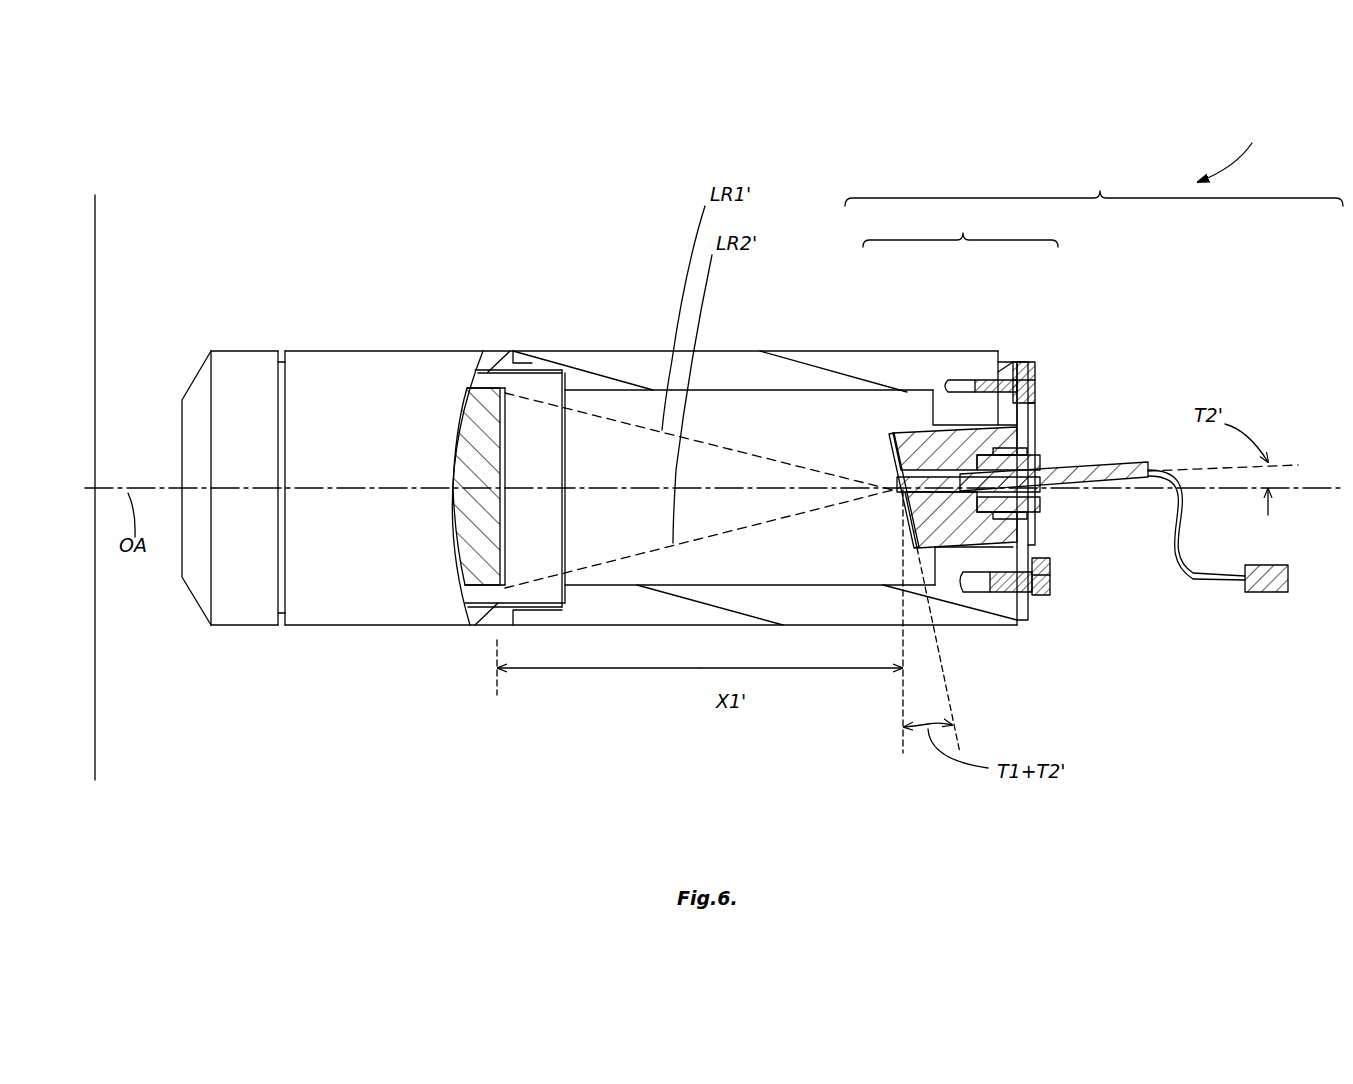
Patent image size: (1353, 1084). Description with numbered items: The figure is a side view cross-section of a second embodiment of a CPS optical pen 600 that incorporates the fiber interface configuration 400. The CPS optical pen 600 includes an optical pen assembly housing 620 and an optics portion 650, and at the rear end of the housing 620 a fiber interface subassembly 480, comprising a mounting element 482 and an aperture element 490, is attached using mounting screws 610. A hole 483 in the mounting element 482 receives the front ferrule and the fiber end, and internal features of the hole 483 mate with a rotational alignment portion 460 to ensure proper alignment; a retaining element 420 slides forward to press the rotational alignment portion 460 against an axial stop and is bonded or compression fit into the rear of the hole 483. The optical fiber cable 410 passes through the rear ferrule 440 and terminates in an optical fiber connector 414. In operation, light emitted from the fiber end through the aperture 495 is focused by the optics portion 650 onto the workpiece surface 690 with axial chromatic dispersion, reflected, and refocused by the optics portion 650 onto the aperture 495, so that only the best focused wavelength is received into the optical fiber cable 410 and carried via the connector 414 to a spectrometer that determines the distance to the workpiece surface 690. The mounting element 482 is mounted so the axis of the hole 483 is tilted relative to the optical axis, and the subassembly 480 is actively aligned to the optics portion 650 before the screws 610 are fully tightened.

The CPS optical pen fiber interface configuration 400 is at (1094, 185).
The optical fiber cable 410 is at (1228, 582).
The optical fiber connector 414 is at (1280, 594).
The retaining element 420 is at (1035, 455).
The rear ferrule 440 is at (1148, 462).
The rotational alignment portion 460 is at (995, 512).
The fiber interface subassembly 480 is at (960, 226).
The mounting element 482 is at (1003, 360).
The hole 483 is at (1040, 428).
The aperture element 490 is at (898, 440).
The aperture 495 is at (888, 445).
The CPS optical pen 600 is at (1236, 148).
The mounting screws 610 is at (1025, 360).
The optical pen assembly housing 620 is at (815, 350).
The optics portion 650 is at (580, 326).
The workpiece surface 690 is at (96, 230).